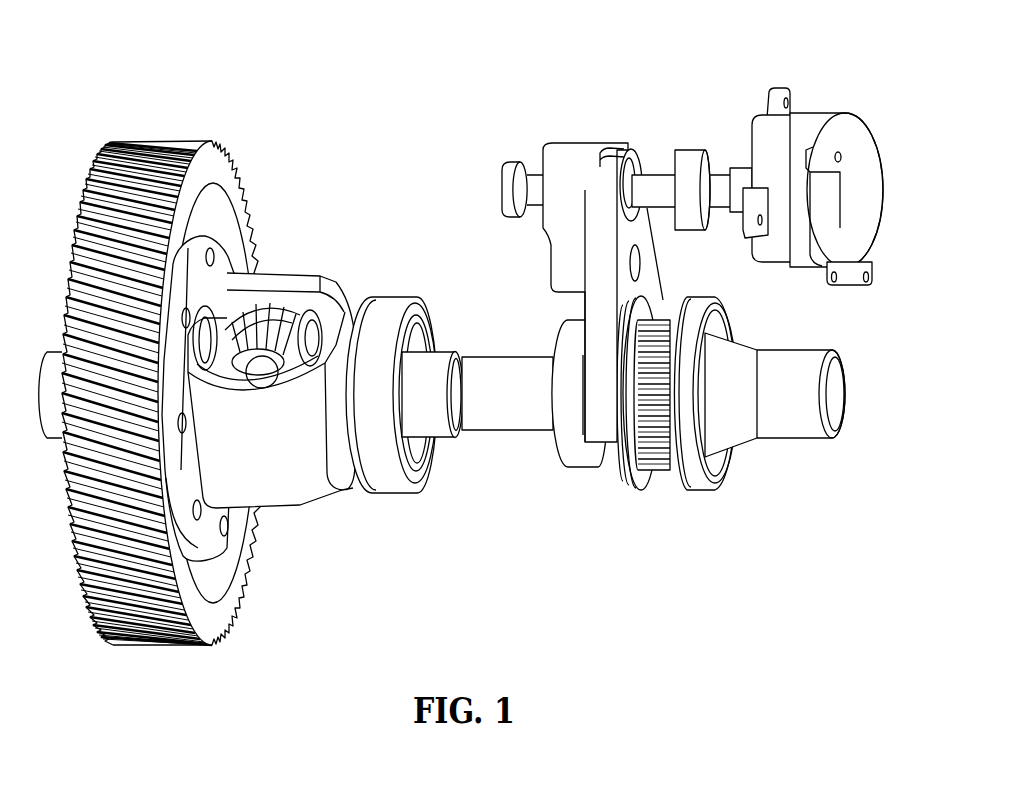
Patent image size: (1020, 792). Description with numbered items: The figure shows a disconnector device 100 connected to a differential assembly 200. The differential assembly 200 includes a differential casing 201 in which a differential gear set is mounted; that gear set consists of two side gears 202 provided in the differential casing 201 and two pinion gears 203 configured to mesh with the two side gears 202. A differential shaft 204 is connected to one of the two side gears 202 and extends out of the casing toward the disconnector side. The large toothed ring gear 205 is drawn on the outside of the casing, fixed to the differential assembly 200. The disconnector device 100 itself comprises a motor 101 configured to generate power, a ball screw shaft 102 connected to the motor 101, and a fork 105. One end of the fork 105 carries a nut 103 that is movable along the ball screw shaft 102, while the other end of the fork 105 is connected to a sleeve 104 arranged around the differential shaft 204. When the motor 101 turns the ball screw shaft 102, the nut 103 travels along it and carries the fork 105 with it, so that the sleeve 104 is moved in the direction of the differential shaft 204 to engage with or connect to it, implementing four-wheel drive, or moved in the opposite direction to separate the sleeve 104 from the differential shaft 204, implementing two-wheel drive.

The disconnector device 100 is at (692, 271).
The motor 101 is at (835, 122).
The ball screw shaft 102 is at (717, 180).
The nut 103 is at (633, 212).
The sleeve 104 is at (623, 486).
The fork 105 is at (597, 418).
The differential assembly 200 is at (442, 341).
The differential casing 201 is at (325, 490).
The side gears 202 is at (222, 325).
The pinion gears 203 is at (270, 312).
The differential shaft 204 is at (623, 412).
The ring gear 205 is at (141, 152).